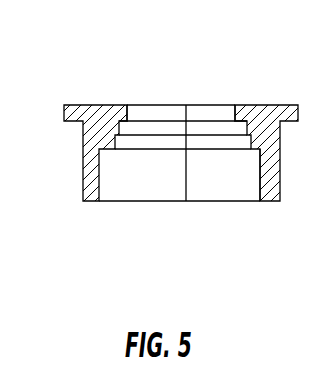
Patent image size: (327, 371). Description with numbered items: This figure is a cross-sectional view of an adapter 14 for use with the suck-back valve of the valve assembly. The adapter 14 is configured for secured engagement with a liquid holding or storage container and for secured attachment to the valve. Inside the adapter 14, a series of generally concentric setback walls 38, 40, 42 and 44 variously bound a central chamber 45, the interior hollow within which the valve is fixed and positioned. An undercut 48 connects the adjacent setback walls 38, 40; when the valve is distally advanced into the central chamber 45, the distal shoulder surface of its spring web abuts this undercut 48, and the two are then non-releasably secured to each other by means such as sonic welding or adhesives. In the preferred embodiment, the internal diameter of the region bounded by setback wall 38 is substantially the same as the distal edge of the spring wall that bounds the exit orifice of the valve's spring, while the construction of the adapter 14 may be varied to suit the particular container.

The adapter 14 is at (57, 194).
The setback wall 38 is at (128, 108).
The undercut 48 is at (141, 127).
The setback wall 40 is at (240, 123).
The setback wall 42 is at (128, 152).
The setback wall 44 is at (260, 182).
The central chamber 45 is at (200, 194).